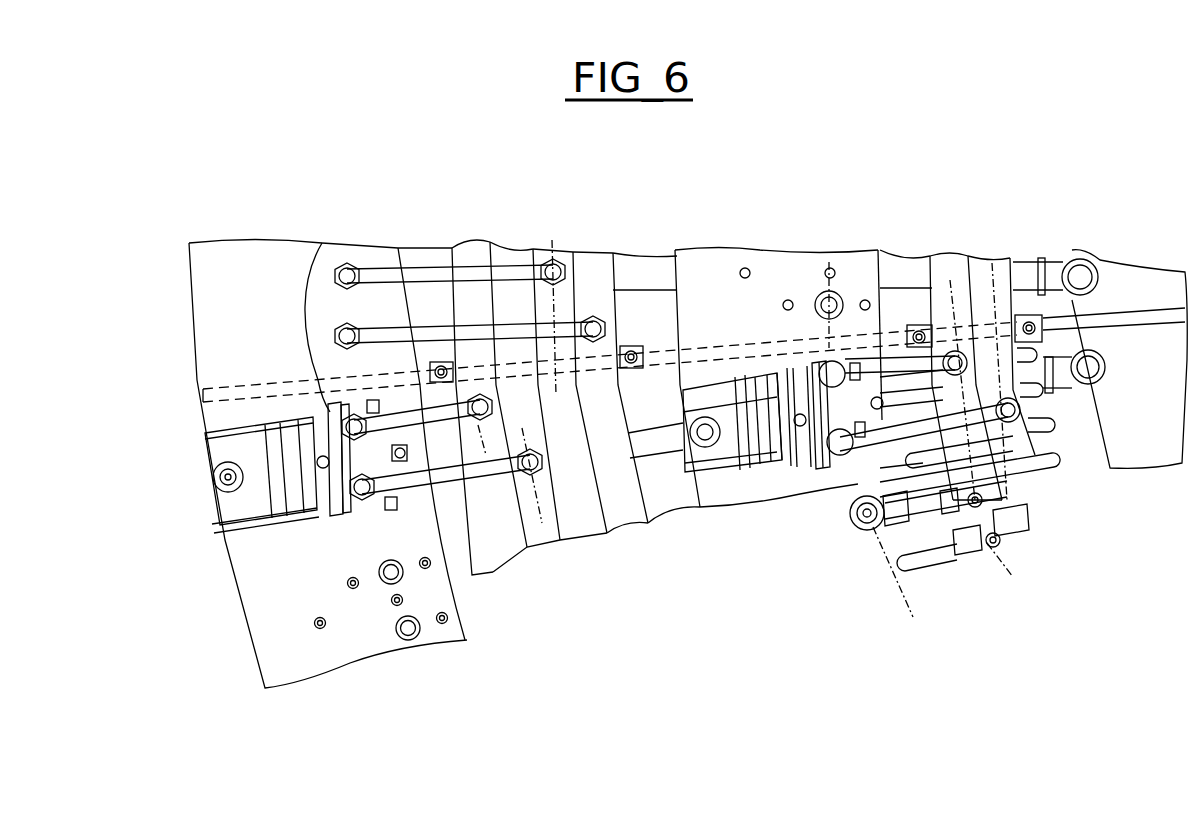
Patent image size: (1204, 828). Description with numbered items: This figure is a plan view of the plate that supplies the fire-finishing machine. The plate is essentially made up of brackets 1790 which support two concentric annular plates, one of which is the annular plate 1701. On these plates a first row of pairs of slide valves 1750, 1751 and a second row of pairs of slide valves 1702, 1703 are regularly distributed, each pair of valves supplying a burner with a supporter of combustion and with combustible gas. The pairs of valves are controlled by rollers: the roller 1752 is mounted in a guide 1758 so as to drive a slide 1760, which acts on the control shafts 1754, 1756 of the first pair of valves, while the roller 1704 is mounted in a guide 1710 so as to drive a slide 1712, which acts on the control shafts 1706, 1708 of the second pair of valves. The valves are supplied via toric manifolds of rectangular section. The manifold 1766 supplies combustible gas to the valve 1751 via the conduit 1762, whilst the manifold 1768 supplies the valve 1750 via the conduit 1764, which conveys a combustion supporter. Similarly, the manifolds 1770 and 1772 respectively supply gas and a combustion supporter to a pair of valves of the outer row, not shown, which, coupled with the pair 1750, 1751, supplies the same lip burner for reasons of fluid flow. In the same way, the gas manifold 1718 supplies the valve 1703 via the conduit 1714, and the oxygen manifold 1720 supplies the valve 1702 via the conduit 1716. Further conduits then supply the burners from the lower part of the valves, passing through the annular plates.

The annular plate 1701 is at (233, 261).
The slide valve 1702 is at (820, 467).
The slide valve 1703 is at (812, 378).
The roller 1704 is at (712, 480).
The control shaft 1706 is at (763, 390).
The control shaft 1708 is at (776, 478).
The guide 1710 is at (723, 482).
The slide 1712 is at (745, 398).
The conduit 1714 is at (902, 372).
The conduit 1716 is at (938, 422).
The gas manifold 1718 is at (957, 268).
The oxygen manifold 1720 is at (998, 265).
The slide valve 1750 is at (347, 477).
The slide valve 1751 is at (322, 243).
The roller 1752 is at (222, 476).
The control shaft 1754 is at (290, 430).
The control shaft 1756 is at (302, 497).
The guide 1758 is at (250, 526).
The slide 1760 is at (277, 457).
The conduit 1762 is at (430, 417).
The conduit 1764 is at (447, 473).
The manifold 1766 is at (471, 253).
The manifold 1768 is at (515, 256).
The manifold 1770 is at (585, 527).
The manifold 1772 is at (628, 522).
The bracket 1790 is at (658, 343).